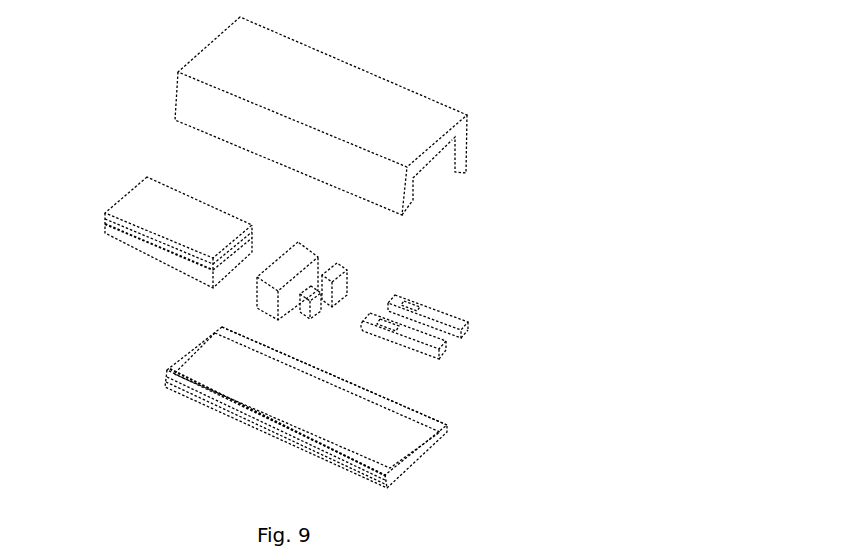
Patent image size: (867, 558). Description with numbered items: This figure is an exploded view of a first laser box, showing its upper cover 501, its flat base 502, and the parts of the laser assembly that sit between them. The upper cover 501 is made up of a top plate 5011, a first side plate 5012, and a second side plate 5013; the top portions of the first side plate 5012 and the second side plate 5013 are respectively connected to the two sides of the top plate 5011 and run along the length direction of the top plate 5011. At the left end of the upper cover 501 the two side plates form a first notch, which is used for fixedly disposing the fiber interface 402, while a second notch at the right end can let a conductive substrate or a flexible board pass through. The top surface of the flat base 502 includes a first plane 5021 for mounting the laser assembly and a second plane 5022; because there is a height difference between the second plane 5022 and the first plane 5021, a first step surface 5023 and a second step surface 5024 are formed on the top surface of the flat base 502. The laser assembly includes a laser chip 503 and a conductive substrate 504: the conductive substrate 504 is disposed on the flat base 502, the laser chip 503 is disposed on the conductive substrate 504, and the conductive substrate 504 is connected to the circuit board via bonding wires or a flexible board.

The upper cover 501 is at (335, 129).
The top plate 5011 is at (280, 95).
The first side plate 5012 is at (285, 133).
The second side plate 5013 is at (447, 155).
The fiber interface 402 is at (183, 232).
The laser chip 503 is at (410, 302).
The conductive substrate 504 is at (463, 323).
The flat base 502 is at (283, 418).
The first plane 5021 is at (247, 385).
The second plane 5022 is at (175, 382).
The first step surface 5023 is at (350, 450).
The second step surface 5024 is at (391, 407).